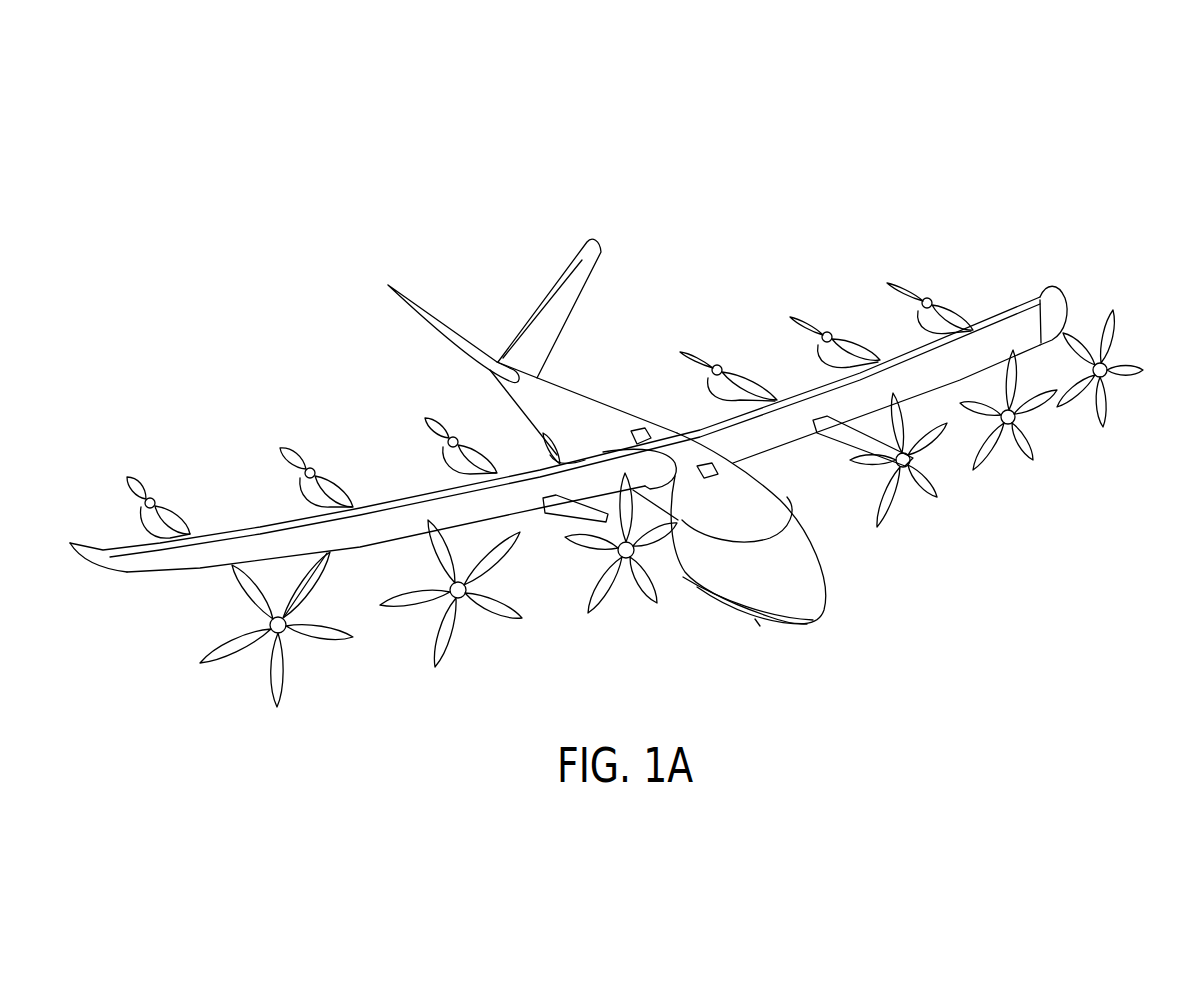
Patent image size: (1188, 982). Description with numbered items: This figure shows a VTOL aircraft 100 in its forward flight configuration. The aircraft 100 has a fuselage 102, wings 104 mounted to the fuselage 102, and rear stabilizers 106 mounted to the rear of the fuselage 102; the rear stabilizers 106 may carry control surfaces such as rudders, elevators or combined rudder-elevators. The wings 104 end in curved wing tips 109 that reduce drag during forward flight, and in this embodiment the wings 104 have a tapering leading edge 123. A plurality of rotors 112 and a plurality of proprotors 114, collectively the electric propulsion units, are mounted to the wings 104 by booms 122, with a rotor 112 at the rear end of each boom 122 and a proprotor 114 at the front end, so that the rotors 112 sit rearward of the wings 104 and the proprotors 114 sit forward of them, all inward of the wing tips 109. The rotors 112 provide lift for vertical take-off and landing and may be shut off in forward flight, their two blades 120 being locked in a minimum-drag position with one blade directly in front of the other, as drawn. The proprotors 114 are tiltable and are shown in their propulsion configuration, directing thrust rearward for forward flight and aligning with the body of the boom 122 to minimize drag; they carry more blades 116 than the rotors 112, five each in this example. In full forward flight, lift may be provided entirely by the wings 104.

The aircraft 100 is at (766, 172).
The fuselage 102 is at (598, 400).
The wings 104 is at (137, 580).
The rear stabilizers 106 is at (412, 294).
The wing tips 109 is at (92, 562).
The rotors 112 is at (155, 492).
The proprotors 114 is at (295, 652).
The blades 116 is at (210, 660).
The blades 120 is at (130, 480).
The booms 122 is at (450, 470).
The tapering leading edge 123 is at (527, 520).